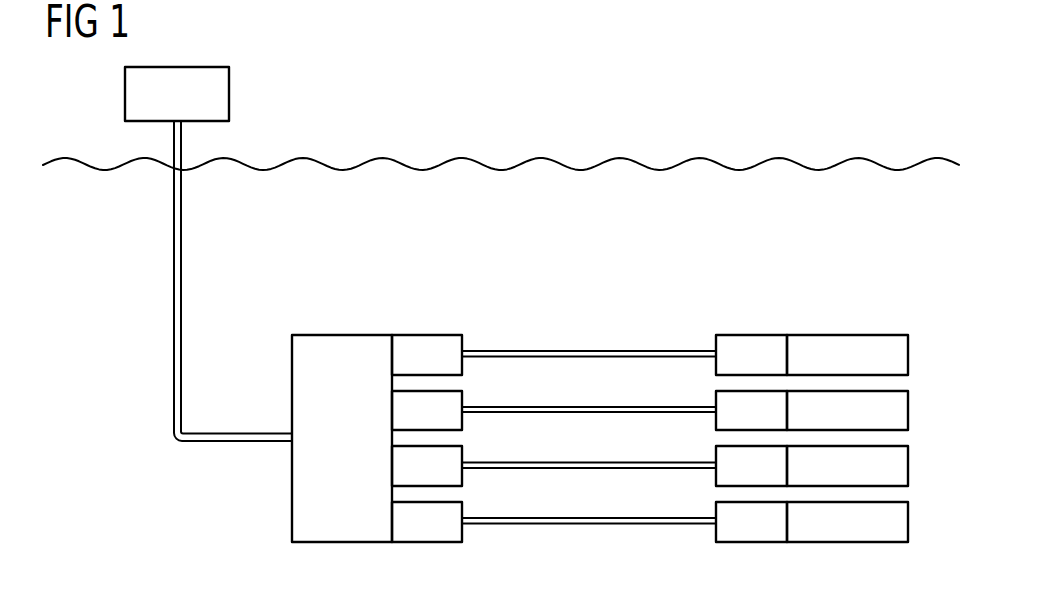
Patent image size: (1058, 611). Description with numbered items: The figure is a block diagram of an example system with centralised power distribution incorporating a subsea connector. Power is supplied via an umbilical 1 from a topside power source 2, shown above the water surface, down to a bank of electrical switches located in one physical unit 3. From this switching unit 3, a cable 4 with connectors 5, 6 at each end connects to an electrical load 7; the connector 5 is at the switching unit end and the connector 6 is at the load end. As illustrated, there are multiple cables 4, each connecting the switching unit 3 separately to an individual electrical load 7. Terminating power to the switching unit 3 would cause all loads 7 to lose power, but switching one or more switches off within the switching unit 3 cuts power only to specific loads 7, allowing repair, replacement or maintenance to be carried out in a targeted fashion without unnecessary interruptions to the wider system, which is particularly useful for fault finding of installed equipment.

The umbilical 1 is at (173, 273).
The topside power source 2 is at (229, 95).
The switching unit 3 is at (340, 343).
The cable 4 is at (589, 351).
The connector 5 is at (452, 366).
The connector 6 is at (725, 364).
The electrical load 7 is at (900, 354).